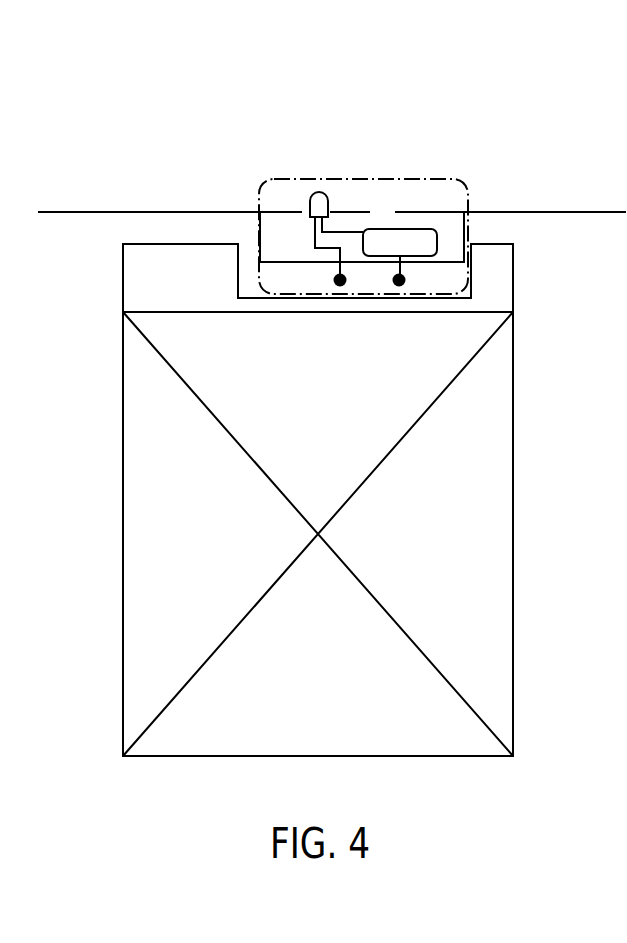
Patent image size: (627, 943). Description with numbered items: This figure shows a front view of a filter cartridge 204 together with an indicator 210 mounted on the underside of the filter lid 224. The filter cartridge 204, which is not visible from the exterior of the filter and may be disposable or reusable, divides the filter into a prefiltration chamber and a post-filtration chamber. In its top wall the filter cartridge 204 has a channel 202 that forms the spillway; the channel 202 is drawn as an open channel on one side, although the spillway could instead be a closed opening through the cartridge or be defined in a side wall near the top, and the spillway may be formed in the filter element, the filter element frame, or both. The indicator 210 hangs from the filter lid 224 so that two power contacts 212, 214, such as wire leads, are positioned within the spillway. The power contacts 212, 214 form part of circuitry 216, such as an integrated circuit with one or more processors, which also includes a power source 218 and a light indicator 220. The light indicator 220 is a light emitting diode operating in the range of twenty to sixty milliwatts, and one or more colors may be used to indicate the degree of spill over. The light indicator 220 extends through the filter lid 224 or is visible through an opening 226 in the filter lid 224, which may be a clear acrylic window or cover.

The indicator 210 is at (270, 75).
The circuitry 216 is at (427, 177).
The filter lid 224 is at (140, 212).
The opening 226 is at (360, 211).
The light indicator 220 is at (317, 196).
The power source 218 is at (415, 228).
The power contact 212 is at (338, 287).
The power contact 214 is at (398, 287).
The channel 202 is at (246, 300).
The filter cartridge 204 is at (143, 527).